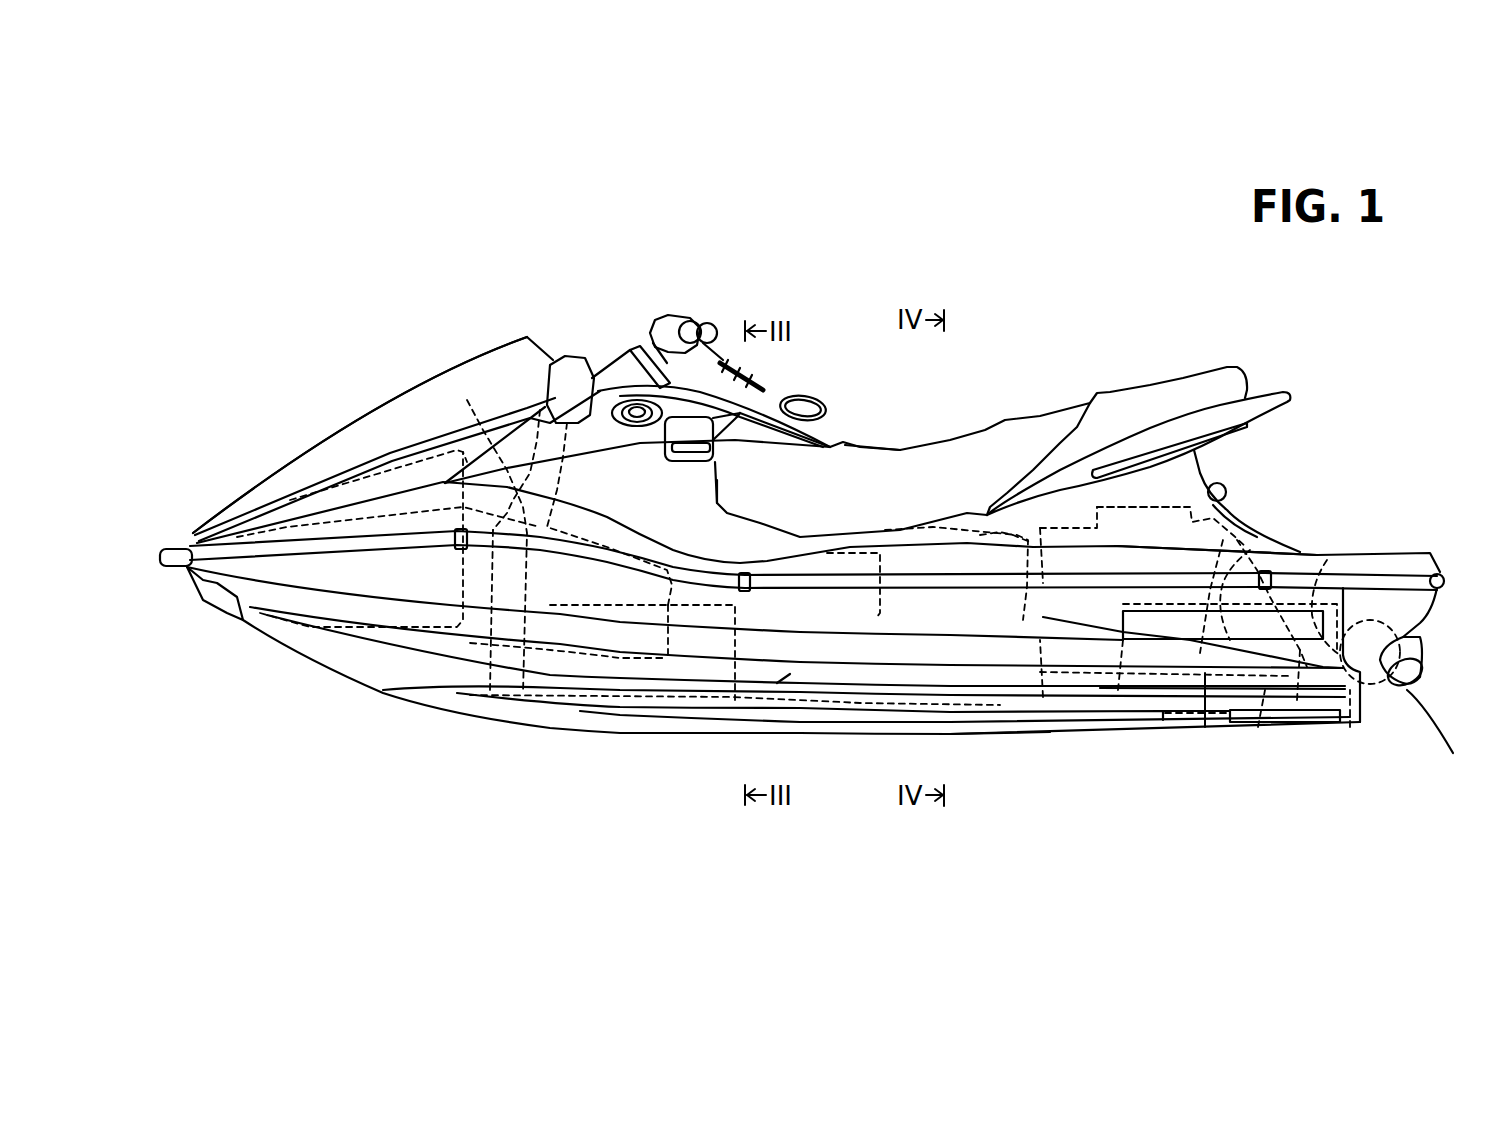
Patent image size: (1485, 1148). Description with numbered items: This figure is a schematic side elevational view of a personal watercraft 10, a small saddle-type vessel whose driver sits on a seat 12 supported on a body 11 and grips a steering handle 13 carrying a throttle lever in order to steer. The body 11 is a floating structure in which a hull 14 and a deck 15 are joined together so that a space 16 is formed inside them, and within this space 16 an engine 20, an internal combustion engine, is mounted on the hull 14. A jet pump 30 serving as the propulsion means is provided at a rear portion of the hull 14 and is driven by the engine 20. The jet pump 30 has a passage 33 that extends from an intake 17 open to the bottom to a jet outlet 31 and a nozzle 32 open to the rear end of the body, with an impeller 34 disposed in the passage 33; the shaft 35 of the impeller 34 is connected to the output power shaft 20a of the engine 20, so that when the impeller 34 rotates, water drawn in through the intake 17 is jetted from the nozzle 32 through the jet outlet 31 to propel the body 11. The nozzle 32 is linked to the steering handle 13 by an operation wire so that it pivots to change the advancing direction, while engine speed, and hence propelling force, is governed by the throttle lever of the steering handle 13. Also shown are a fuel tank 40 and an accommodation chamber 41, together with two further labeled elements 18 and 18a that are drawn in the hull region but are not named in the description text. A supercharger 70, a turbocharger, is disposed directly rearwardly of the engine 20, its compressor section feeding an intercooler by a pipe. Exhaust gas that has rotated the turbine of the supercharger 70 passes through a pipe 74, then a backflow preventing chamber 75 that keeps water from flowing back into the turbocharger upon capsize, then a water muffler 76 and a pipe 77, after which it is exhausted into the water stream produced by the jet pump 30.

The personal watercraft 10 is at (548, 315).
The body 11 is at (1250, 470).
The seat 12 is at (873, 447).
The steering handle 13 is at (710, 323).
The hull 14 is at (981, 750).
The deck 15 is at (1257, 537).
The space 16 is at (780, 677).
The intake 17 is at (1172, 720).
The fuel tank 18 is at (467, 400).
The fuel tank bottom 18a is at (490, 690).
The engine 20 is at (950, 533).
The output power shaft 20a is at (1043, 697).
The jet pump 30 is at (1350, 727).
The jet outlet 31 is at (1390, 700).
The nozzle 32 is at (1439, 745).
The passage 33 is at (1258, 727).
The impeller 34 is at (1297, 700).
The shaft 35 is at (1205, 727).
The fuel tank 40 is at (662, 700).
The accommodation chamber 41 is at (353, 477).
The supercharger 70 is at (1118, 690).
The pipe 74 is at (1040, 528).
The backflow preventing chamber 75 is at (1123, 507).
The water muffler 76 is at (1327, 560).
The pipe 77 is at (1250, 550).